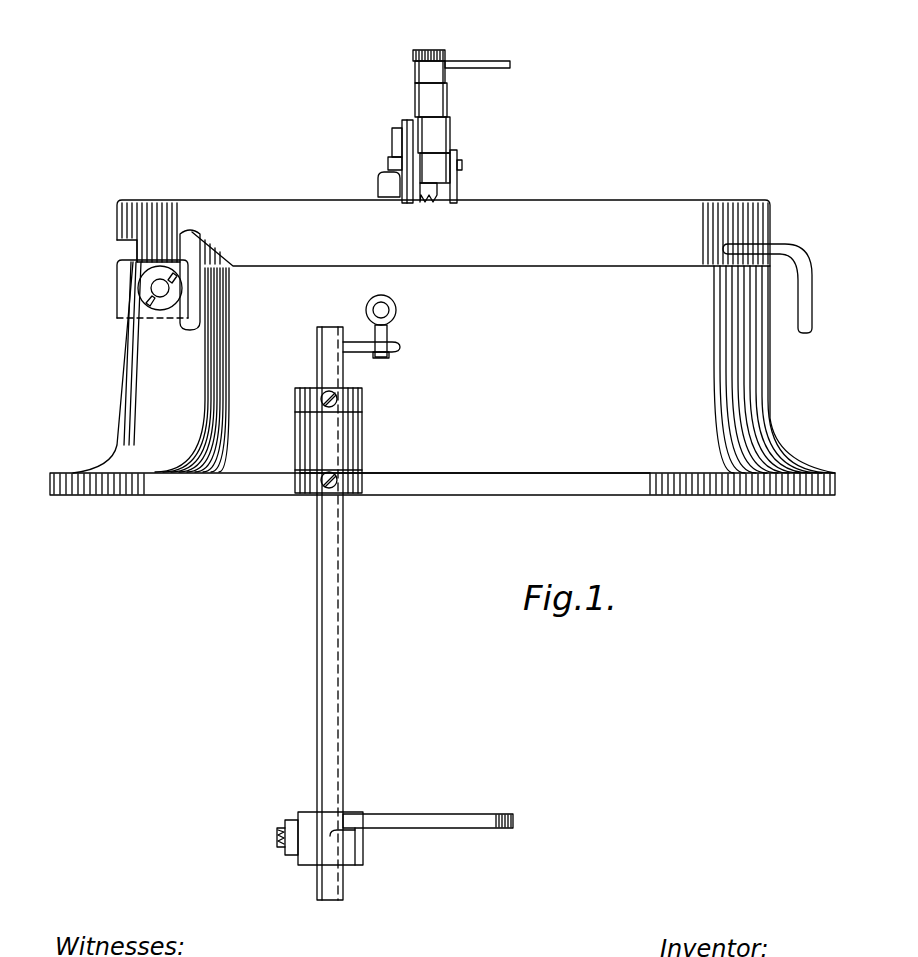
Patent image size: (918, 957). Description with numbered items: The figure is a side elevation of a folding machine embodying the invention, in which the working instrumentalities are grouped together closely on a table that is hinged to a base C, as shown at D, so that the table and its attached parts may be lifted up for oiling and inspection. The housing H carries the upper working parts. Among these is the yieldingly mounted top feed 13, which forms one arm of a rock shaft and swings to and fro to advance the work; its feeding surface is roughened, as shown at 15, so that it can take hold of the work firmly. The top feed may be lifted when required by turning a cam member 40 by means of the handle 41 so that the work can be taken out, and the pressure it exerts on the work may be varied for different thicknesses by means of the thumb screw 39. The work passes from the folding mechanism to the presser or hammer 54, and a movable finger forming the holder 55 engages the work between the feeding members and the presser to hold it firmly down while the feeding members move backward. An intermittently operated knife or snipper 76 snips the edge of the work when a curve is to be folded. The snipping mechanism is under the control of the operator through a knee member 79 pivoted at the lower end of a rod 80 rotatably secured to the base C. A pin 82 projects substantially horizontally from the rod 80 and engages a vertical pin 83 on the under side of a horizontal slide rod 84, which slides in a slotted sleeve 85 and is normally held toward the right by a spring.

The housing / casing H is at (632, 205).
The hinge D is at (158, 288).
The base C is at (633, 453).
The thumb screw 39 is at (418, 50).
The cam member 40 is at (425, 72).
The handle 41 is at (483, 64).
The top feed 13 is at (437, 165).
The roughened surface 15 is at (453, 200).
The knife or snipper 76 is at (392, 170).
The holder finger 55 is at (392, 160).
The presser or hammer 54 is at (387, 185).
The slotted sleeve 85 is at (392, 300).
The horizontal slide rod 84 is at (383, 311).
The pin 82 is at (400, 347).
The vertical pin 83 is at (382, 358).
The rod 80 is at (330, 663).
The knee member 79 is at (447, 820).